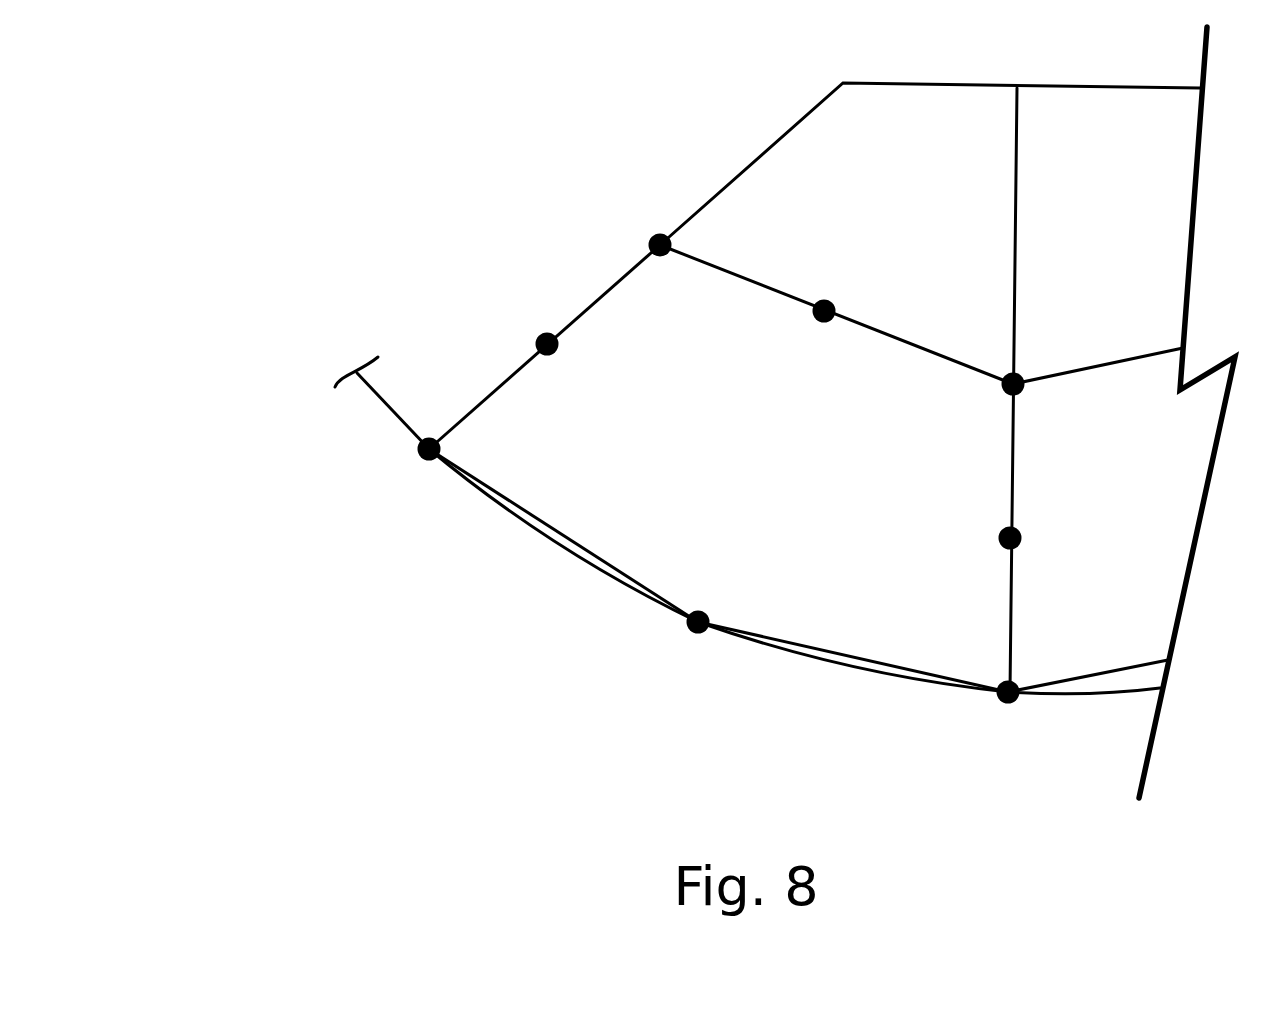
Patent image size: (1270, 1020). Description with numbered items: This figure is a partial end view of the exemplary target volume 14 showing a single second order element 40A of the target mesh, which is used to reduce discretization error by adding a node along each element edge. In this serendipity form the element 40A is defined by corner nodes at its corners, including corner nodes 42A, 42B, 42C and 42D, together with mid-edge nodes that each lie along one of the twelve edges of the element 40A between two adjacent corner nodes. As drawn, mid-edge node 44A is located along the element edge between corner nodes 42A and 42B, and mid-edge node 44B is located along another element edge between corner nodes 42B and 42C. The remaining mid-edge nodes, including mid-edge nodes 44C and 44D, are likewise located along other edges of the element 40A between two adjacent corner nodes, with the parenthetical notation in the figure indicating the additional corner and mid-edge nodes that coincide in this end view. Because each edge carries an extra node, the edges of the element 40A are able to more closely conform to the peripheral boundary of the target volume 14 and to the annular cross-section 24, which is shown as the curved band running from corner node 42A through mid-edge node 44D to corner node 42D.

The target volume 14 is at (317, 323).
The annular cross-section 24 is at (527, 532).
The element 40A is at (780, 518).
The corner node 42A is at (425, 455).
The corner node 42B is at (655, 243).
The corner node 42C is at (1018, 382).
The corner node 42D is at (1006, 704).
The mid-edge node 44A is at (540, 342).
The mid-edge node 44B is at (830, 305).
The mid-edge node 44C is at (1018, 535).
The mid-edge node 44D is at (698, 634).